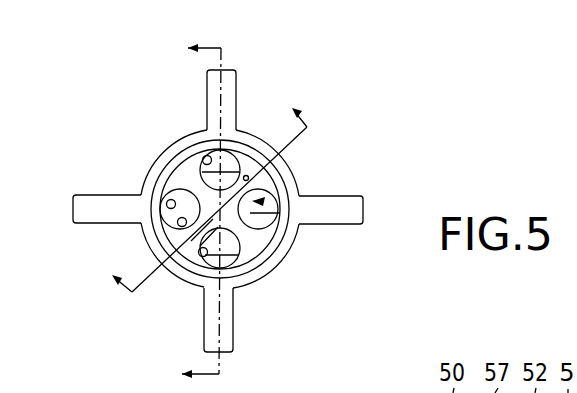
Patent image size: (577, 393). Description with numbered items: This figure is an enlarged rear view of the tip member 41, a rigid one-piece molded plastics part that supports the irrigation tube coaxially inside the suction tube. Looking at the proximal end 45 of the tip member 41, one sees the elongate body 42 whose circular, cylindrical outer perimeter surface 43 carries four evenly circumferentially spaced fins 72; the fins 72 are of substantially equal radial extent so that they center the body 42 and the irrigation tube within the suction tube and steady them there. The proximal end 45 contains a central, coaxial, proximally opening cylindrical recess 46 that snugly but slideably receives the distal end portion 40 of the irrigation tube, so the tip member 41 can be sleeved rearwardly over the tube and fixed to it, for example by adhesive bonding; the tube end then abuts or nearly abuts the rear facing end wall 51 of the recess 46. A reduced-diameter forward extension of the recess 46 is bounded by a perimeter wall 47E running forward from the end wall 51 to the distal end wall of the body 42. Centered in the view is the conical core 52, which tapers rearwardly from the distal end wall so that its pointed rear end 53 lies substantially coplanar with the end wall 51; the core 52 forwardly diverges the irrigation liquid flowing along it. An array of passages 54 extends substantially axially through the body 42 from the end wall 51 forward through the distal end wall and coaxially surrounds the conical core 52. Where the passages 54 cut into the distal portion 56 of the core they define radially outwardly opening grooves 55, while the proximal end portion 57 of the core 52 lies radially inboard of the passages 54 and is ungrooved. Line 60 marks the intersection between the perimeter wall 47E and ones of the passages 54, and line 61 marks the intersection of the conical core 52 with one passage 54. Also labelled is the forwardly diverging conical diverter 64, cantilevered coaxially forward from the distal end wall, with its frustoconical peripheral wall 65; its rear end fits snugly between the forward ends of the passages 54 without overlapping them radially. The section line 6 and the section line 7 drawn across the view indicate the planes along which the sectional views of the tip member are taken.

The section line 6- 6 is at (201, 199).
The section line 7- 7 is at (208, 200).
The distal end portion 40 is at (380, 392).
The tip member 41 is at (342, 137).
The elongate body 42 is at (300, 261).
The outer perimeter surface 43 is at (290, 249).
The proximal end 45 is at (292, 270).
The recess 46 is at (190, 140).
The perimeter wall 47E is at (247, 175).
The rear facing end wall 51 is at (200, 137).
The conical core 52 is at (277, 283).
The pointed rear end 53 is at (165, 182).
The passages 54 is at (198, 130).
The grooves 55 is at (243, 155).
The distal portion 56 is at (177, 160).
The proximal end portion 57 is at (188, 252).
The line of intersection 60 is at (170, 225).
The line of intersection 61 is at (246, 243).
The conical diverter 64 is at (293, 170).
The frustoconical peripheral wall 65 is at (303, 197).
The fins 72 is at (228, 328).